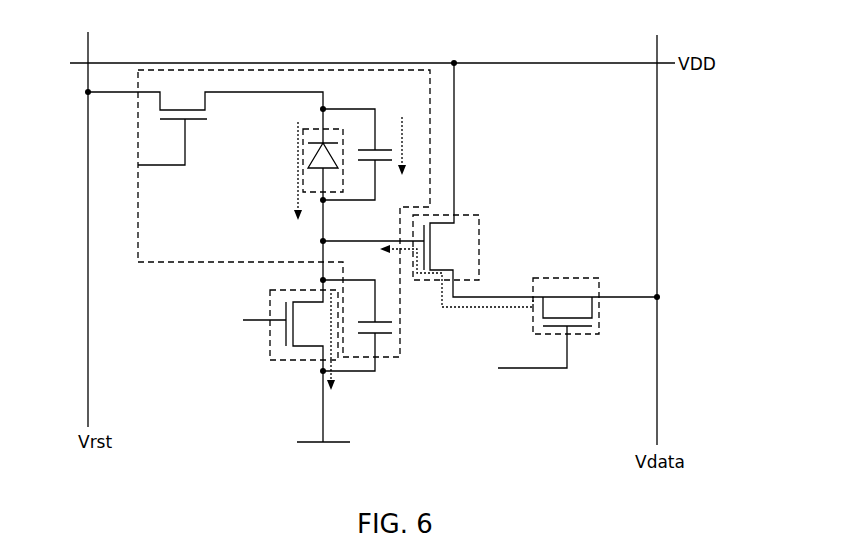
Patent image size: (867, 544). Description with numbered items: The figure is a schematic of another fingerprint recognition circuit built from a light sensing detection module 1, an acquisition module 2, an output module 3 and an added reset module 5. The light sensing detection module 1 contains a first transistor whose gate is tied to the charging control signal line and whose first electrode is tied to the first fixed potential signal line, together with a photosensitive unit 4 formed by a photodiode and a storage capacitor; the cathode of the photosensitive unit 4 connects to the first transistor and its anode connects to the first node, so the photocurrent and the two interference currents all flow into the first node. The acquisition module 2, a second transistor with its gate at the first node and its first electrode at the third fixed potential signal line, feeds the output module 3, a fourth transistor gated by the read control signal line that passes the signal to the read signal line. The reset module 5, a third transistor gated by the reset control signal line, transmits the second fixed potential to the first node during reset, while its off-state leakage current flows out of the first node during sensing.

The light sensing detection module 1 is at (247, 68).
The acquisition module 2 is at (480, 243).
The output module 3 is at (570, 278).
The photosensitive unit 4 is at (306, 128).
The reset module 5 is at (270, 296).